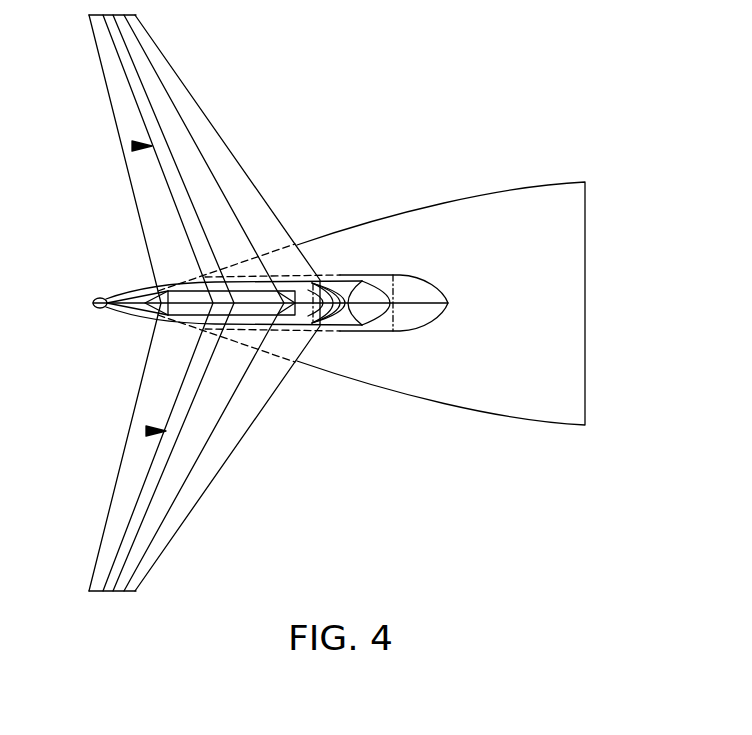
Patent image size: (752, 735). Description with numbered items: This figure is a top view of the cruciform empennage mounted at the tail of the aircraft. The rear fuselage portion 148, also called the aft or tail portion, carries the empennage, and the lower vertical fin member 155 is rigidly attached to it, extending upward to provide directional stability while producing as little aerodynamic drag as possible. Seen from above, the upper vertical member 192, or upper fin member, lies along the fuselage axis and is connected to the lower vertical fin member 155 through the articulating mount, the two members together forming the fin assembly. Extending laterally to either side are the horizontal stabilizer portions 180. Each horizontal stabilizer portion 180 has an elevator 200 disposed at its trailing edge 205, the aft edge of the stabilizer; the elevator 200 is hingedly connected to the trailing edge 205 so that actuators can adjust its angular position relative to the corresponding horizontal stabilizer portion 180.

The rear fuselage portion 148 is at (558, 370).
The lower vertical fin member 155 is at (393, 277).
The horizontal stabilizer portion 180 is at (205, 137).
The upper vertical member 192 is at (157, 323).
The elevator 200 is at (158, 224).
The trailing edge 205 is at (133, 146).